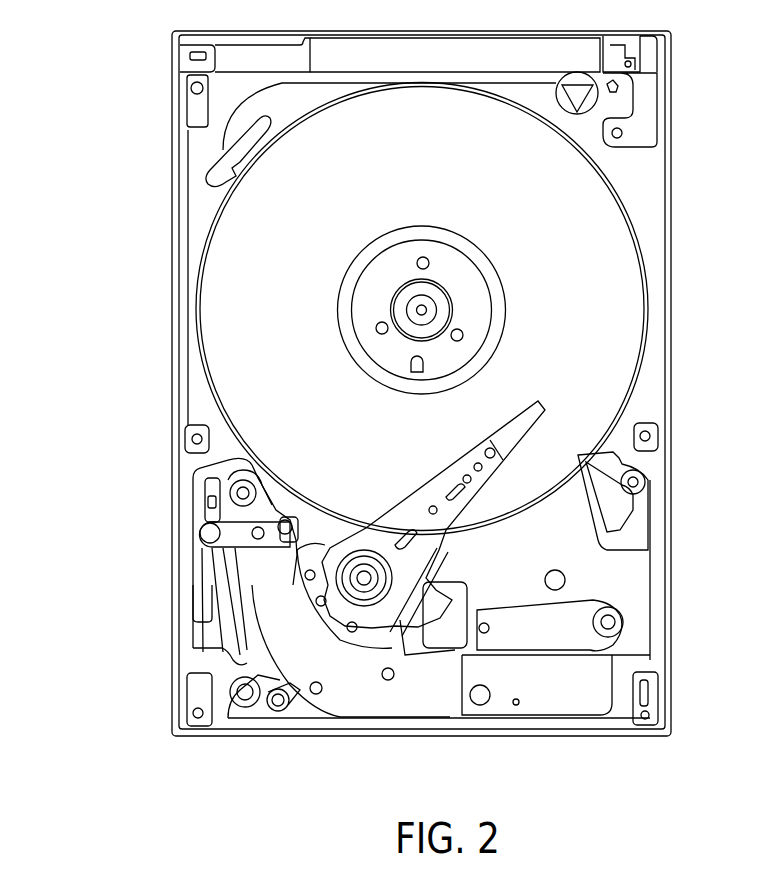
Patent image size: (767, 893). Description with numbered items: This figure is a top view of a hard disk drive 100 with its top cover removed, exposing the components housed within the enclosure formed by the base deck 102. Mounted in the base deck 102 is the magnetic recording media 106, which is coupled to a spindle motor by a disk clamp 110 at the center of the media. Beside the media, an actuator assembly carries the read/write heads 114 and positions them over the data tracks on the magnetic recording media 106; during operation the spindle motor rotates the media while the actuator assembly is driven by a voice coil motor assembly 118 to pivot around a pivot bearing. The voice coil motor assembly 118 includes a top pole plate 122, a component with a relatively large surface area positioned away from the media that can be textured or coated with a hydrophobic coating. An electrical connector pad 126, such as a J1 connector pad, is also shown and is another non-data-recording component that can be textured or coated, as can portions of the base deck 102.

The hard disk drive 100 is at (100, 107).
The base deck 102 is at (652, 172).
The magnetic recording media 106 is at (607, 242).
The disk clamp 110 is at (450, 262).
The read/write heads 114 is at (545, 408).
The voice coil motor assembly 118 is at (168, 542).
The top pole plate 122 is at (337, 688).
The electrical connector pad 126 is at (595, 650).